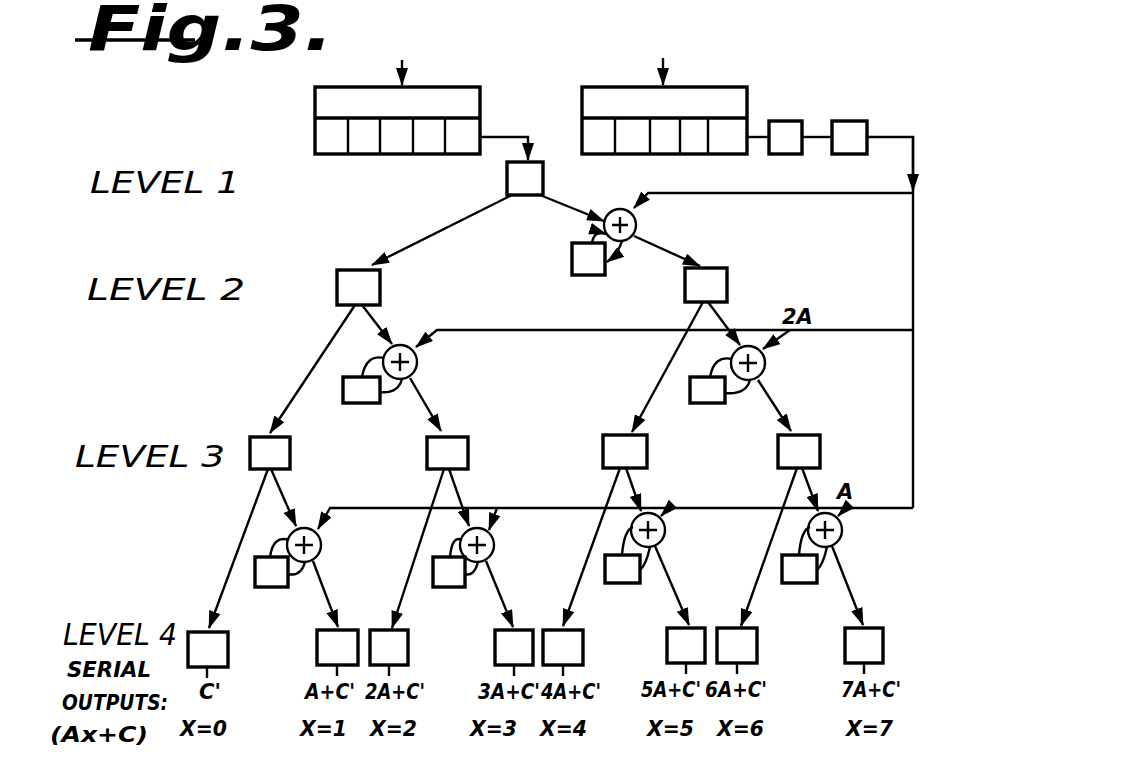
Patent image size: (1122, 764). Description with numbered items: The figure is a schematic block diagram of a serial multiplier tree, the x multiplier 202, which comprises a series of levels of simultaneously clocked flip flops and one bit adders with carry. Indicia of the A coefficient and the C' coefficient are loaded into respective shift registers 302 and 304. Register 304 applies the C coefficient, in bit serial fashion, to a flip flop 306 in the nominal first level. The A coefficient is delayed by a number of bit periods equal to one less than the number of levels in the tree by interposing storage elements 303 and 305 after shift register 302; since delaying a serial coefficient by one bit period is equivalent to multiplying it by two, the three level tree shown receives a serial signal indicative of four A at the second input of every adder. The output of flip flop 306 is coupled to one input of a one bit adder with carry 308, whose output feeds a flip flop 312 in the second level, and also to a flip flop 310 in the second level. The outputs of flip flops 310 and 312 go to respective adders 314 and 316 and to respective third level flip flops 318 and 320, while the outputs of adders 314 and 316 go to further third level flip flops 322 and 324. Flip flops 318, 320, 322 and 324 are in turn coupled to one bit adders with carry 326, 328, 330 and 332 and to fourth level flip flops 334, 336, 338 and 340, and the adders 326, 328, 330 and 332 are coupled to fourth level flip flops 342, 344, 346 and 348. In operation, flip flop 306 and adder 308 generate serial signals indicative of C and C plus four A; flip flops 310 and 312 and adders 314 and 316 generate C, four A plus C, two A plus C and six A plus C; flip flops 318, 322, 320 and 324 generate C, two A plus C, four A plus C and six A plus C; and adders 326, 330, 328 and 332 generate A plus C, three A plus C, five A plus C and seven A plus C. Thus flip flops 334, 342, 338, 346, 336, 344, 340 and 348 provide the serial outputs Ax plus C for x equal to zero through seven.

The x multiplier 202 is at (298, 368).
The shift register 302 is at (693, 154).
The storage element 303 is at (808, 119).
The shift register 304 is at (395, 156).
The storage element 305 is at (867, 127).
The flip flop 306 is at (543, 180).
The one bit adder with carry 308 is at (636, 225).
The flip flop 310 is at (380, 290).
The flip flop 312 is at (727, 273).
The one bit adder with carry 314 is at (417, 362).
The one bit adder with carry 316 is at (765, 363).
The flip flop 318 is at (290, 455).
The flip flop 320 is at (647, 452).
The flip flop 322 is at (468, 455).
The flip flop 324 is at (820, 456).
The one bit adder with carry 326 is at (321, 545).
The one bit adder with carry 328 is at (665, 530).
The one bit adder with carry 330 is at (500, 543).
The one bit adder with carry 332 is at (842, 530).
The flip flop 334 is at (192, 632).
The flip flop 336 is at (583, 636).
The flip flop 338 is at (408, 636).
The flip flop 340 is at (757, 641).
The flip flop 342 is at (320, 639).
The flip flop 344 is at (667, 656).
The flip flop 346 is at (495, 652).
The flip flop 348 is at (883, 652).